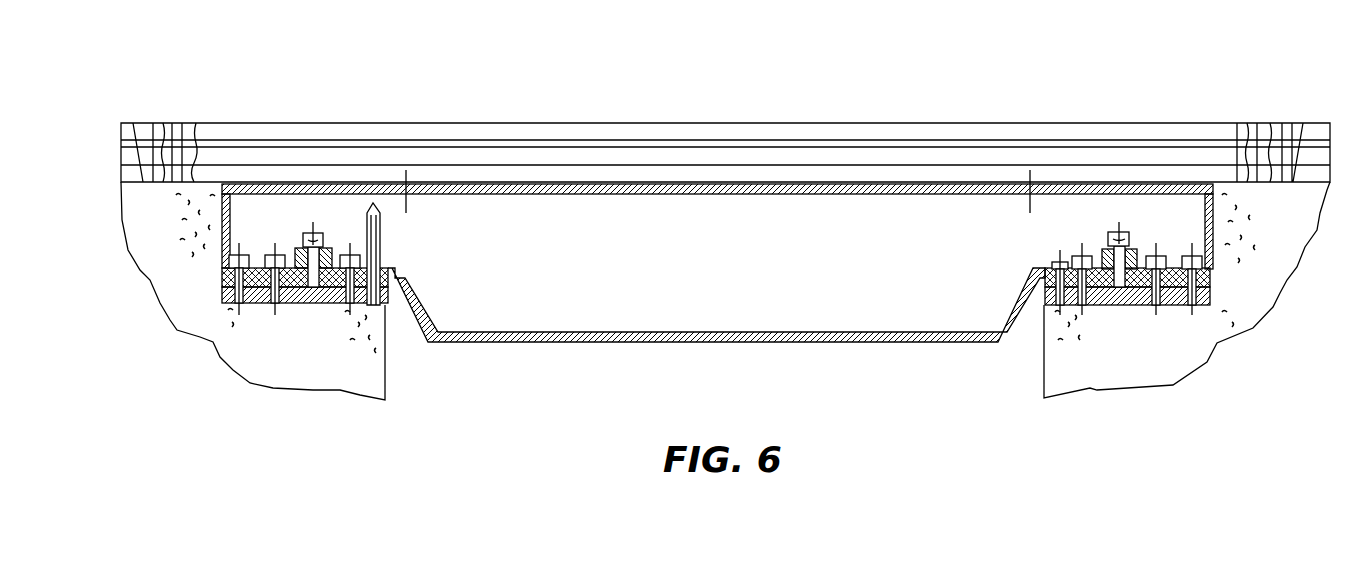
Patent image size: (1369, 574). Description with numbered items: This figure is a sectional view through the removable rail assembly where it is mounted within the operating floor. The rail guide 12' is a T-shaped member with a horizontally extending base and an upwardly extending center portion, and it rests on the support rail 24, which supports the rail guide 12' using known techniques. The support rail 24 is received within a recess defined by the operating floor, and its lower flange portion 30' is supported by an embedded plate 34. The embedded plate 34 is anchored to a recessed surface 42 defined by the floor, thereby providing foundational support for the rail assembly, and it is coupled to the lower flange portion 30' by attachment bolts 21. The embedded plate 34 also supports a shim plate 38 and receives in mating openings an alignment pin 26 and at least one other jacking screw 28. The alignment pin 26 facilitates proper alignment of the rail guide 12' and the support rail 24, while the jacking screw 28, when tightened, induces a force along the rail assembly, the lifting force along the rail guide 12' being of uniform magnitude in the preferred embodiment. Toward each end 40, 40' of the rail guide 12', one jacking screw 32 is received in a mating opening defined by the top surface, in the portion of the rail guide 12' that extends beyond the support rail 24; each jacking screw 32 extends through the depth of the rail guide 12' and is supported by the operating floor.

The rail guide 12' is at (725, 133).
The jacking screw 32 is at (175, 122).
The end of the rail guide 40' is at (230, 242).
The end of the rail guide 40 is at (1206, 241).
The lower flange portion 30' is at (734, 278).
The support rail 24 is at (700, 282).
The attachment bolts 21 is at (240, 307).
The embedded plate 34 is at (313, 310).
The shim plate 38 is at (1155, 307).
The recessed surface 42 is at (327, 307).
The jacking screw 28 is at (306, 230).
The alignment pin 26 is at (362, 220).